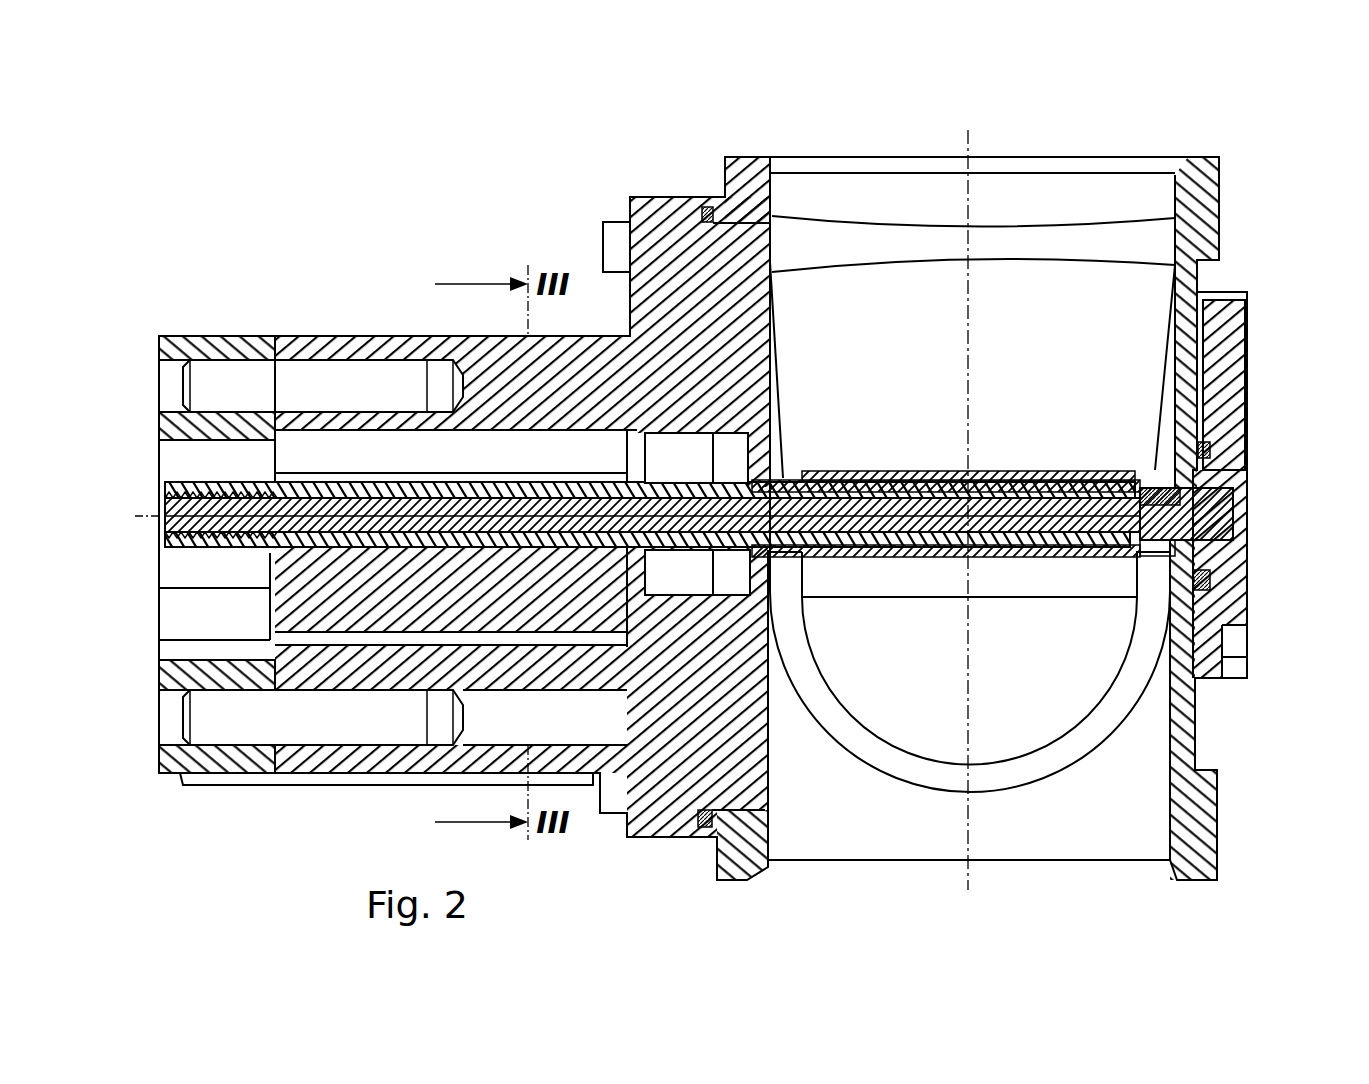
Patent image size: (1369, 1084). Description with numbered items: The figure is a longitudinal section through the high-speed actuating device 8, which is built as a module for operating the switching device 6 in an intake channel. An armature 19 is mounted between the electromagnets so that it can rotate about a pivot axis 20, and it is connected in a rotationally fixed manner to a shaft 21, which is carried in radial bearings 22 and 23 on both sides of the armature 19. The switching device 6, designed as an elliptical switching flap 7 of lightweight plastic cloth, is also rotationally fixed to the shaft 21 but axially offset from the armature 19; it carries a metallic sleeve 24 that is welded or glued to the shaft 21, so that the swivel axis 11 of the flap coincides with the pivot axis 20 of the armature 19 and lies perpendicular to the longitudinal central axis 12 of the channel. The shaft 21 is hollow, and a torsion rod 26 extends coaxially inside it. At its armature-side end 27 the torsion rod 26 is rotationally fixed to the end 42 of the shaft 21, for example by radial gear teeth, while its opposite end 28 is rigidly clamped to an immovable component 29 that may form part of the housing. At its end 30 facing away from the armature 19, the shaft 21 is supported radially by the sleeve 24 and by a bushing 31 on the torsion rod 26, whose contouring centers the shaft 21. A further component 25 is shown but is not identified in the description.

The high-speed actuating device 8 is at (532, 141).
The radial bearing 22 is at (240, 455).
The shaft 21 is at (375, 485).
The end of the shaft 42 is at (198, 487).
The end of the torsion rod 27 is at (200, 527).
The armature 19 is at (373, 622).
The radial bearing 23 is at (667, 470).
The longitudinal central axis 12 is at (968, 333).
The torsion rod 26 is at (820, 478).
The sleeve 24 is at (1003, 472).
The end of the shaft 30 is at (1088, 462).
The immovable component 29 is at (1230, 335).
The end of the torsion rod 28 is at (1236, 488).
The pivot axis 20 is at (1255, 505).
The pivot axis 11 is at (1262, 520).
The bushing 31 is at (1172, 532).
The switching device 6 is at (849, 755).
The switching flap 7 is at (932, 735).
The housing 25 is at (1170, 792).